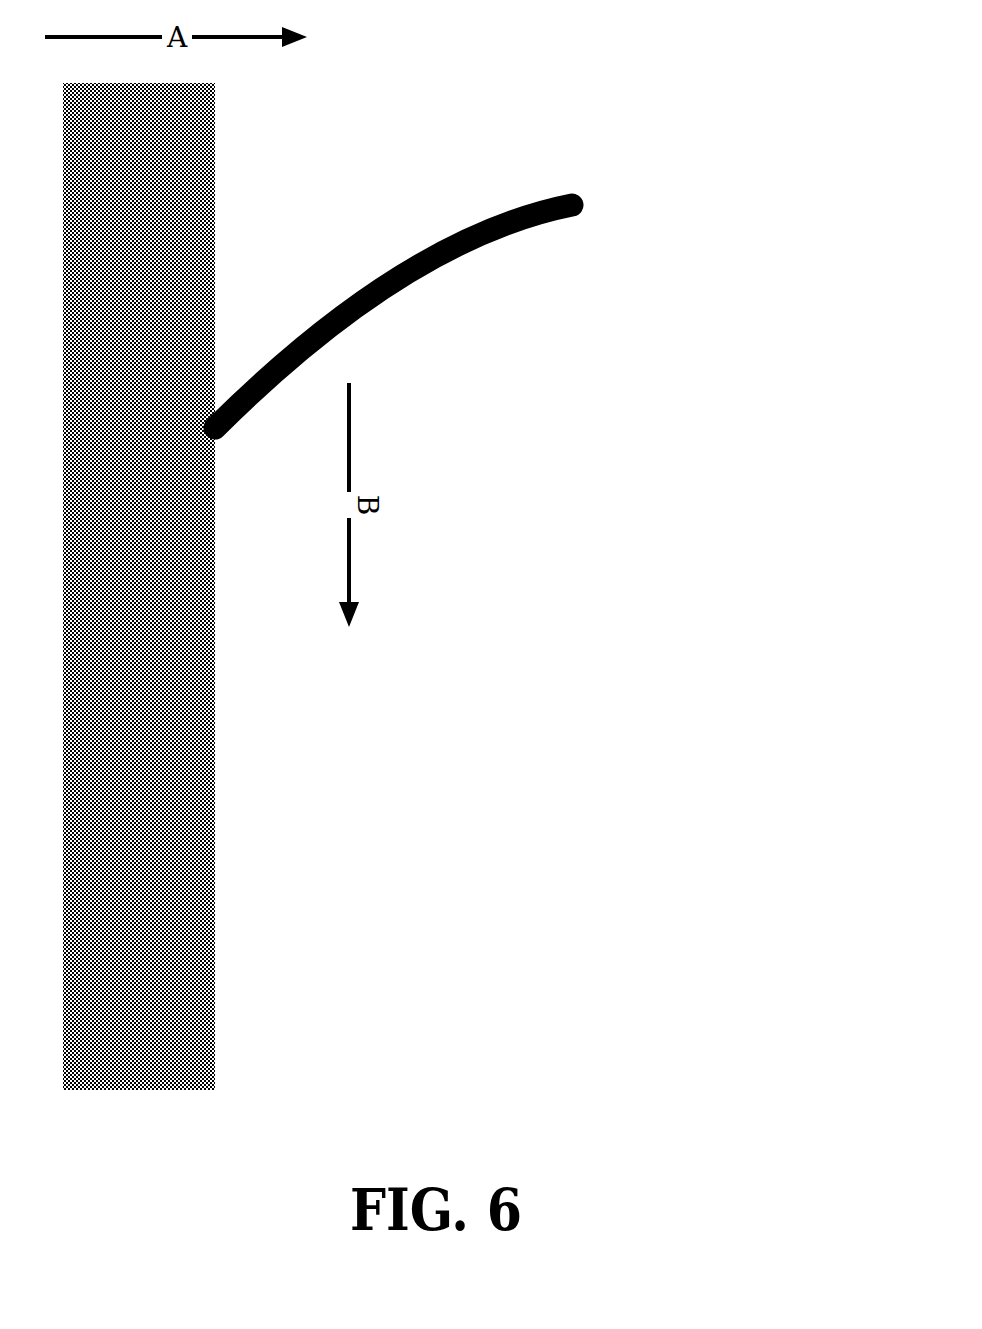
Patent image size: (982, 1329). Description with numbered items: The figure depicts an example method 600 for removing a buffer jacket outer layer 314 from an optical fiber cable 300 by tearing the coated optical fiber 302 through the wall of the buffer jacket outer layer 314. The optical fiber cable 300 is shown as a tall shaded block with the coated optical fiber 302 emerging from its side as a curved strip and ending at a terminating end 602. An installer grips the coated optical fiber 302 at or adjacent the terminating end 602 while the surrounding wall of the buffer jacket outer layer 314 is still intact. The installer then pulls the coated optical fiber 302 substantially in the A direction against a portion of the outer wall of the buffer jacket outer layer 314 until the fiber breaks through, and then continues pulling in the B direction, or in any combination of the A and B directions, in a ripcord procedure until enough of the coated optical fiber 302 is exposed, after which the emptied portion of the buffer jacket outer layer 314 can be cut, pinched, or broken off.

The method for removing a buffer jacket outer layer 600 is at (664, 35).
The optical fiber cable 300 is at (160, 925).
The buffer jacket outer layer 314 is at (125, 128).
The coated optical fiber 302 is at (500, 245).
The terminating end 602 is at (585, 205).